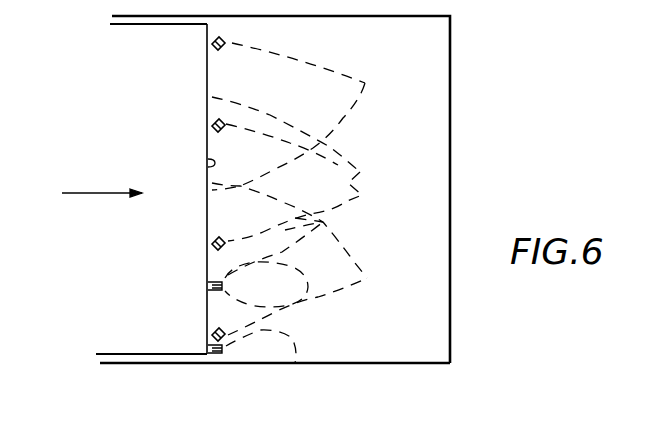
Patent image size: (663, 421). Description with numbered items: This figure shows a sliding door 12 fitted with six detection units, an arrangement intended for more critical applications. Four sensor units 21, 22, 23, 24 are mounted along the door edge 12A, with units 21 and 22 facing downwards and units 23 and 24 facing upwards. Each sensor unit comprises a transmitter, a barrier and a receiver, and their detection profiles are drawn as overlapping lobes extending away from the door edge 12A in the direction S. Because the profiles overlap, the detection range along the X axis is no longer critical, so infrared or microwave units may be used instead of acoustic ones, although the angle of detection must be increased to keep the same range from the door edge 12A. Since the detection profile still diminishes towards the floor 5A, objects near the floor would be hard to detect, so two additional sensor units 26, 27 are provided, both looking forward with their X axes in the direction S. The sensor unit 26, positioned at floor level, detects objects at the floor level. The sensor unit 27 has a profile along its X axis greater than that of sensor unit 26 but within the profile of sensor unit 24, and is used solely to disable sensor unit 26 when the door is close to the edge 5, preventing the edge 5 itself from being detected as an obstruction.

The edge 5 is at (451, 183).
The floor 5A is at (374, 364).
The sliding door 12 is at (116, 173).
The door edge 12A is at (208, 163).
The sensor unit 21 is at (212, 44).
The sensor unit 22 is at (212, 126).
The sensor unit 23 is at (212, 246).
The sensor unit 24 is at (212, 334).
The sensor unit 26 is at (208, 348).
The sensor unit 27 is at (208, 286).